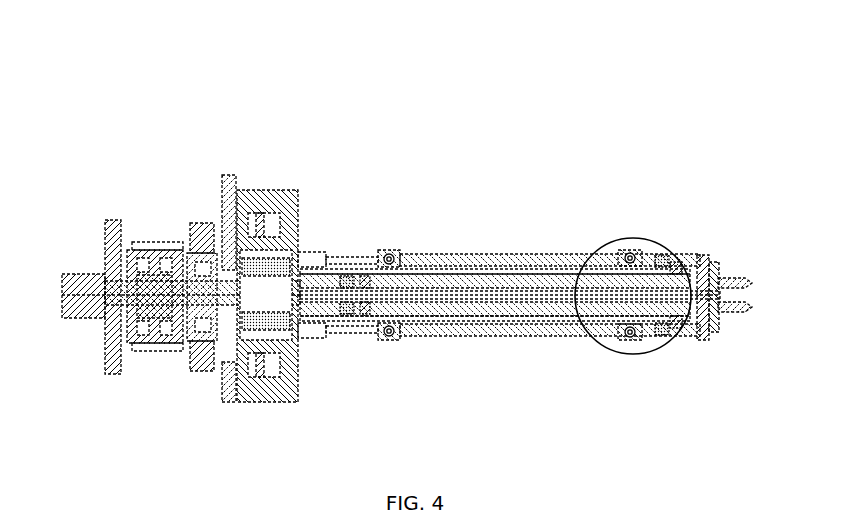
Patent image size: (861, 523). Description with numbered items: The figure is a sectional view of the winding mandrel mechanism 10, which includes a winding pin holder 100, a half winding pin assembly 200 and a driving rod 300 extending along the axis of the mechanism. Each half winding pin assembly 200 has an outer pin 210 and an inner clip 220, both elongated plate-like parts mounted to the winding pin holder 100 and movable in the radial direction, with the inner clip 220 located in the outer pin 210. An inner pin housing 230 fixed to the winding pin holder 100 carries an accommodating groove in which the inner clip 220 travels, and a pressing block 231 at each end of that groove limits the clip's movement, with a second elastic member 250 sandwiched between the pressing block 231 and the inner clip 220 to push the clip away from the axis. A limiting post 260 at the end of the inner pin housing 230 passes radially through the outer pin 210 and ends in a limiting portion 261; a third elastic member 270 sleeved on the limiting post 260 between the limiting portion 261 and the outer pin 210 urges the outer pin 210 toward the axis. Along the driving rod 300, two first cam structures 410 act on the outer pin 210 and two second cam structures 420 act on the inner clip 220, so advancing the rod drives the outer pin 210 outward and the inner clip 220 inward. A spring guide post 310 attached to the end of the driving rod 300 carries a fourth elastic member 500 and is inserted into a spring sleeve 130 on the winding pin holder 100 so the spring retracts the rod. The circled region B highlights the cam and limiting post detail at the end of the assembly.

The winding mandrel mechanism 10 is at (108, 39).
The winding pin holder 100 is at (80, 279).
The spring sleeve 130 is at (213, 272).
The fourth elastic member 500 is at (228, 276).
The spring guide post 310 is at (258, 235).
The half winding pin assembly 200 is at (554, 275).
The outer pin 210 is at (450, 263).
The inner clip 220 is at (518, 258).
The inner pin housing 230 is at (473, 272).
The pressing block 231 is at (350, 282).
The second elastic member 250 is at (367, 280).
The limiting post 260 is at (705, 255).
The limiting portion 261 is at (712, 262).
The third elastic member 270 is at (718, 273).
The driving rod 300 is at (422, 268).
The first cam structure 410 is at (612, 255).
The second cam structure 420 is at (628, 340).
The detail region B is at (676, 350).